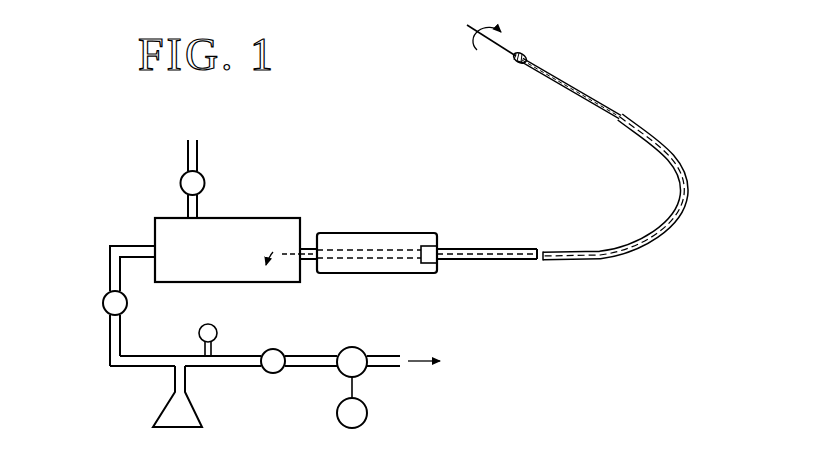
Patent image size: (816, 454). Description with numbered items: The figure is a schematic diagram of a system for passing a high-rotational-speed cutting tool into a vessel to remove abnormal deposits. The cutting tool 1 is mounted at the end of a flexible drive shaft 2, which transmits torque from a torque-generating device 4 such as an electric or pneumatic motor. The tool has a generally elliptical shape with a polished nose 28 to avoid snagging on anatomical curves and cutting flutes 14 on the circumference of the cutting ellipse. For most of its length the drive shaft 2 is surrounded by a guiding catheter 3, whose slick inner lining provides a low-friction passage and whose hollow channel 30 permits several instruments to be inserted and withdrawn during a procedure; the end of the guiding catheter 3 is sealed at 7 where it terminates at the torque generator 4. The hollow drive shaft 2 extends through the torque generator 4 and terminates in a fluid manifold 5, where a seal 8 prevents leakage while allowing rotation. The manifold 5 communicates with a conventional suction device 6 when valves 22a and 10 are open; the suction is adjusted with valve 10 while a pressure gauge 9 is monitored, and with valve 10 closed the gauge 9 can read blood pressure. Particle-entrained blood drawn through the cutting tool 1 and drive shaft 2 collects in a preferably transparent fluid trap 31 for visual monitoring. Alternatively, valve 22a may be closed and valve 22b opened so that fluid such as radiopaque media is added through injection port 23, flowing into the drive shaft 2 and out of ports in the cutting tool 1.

The cutting tool 1 is at (531, 42).
The drive shaft 2 is at (578, 77).
The guiding catheter 3 is at (642, 117).
The torque-generating device 4 is at (386, 229).
The fluid manifold 5 is at (244, 218).
The suction device 6 is at (360, 343).
The seal 7 is at (444, 274).
The seal 8 is at (308, 263).
The pressure gauge 9 is at (217, 331).
The valve 10 is at (278, 343).
The cutting flutes 14 is at (520, 64).
The valve 22a is at (98, 304).
The valve 22b is at (178, 182).
The injection port 23 is at (204, 137).
The nose 28 is at (511, 58).
The hollow channel 30 is at (458, 246).
The fluid trap 31 is at (155, 408).